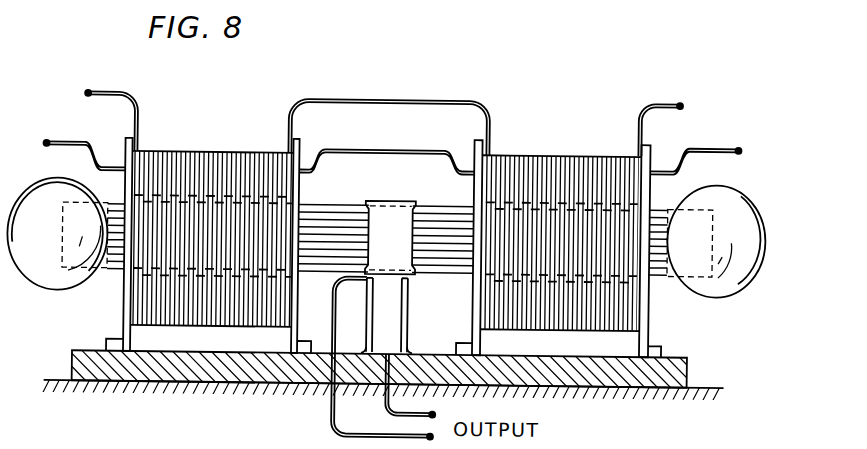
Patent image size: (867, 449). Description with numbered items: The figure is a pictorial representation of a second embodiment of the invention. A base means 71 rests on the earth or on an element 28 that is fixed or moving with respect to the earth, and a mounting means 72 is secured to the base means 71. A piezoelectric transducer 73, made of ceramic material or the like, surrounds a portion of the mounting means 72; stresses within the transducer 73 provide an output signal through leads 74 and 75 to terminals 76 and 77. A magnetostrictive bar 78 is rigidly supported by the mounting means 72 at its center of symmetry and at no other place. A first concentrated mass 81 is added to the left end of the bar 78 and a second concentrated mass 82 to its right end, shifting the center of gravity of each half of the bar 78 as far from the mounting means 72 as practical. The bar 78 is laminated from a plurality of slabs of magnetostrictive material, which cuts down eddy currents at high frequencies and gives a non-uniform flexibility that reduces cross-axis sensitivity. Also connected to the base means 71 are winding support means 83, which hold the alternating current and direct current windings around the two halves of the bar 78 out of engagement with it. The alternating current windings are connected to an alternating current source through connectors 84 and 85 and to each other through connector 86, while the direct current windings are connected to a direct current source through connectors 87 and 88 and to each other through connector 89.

The element 28 is at (50, 383).
The base means 71 is at (82, 364).
The mounting means 72 is at (399, 250).
The piezoelectric transducer 73 is at (397, 320).
The lead 74 is at (328, 336).
The lead 75 is at (384, 372).
The terminal 76 is at (433, 438).
The terminal 77 is at (437, 413).
The magnetostrictive bar 78 is at (340, 214).
The first concentrated mass 81 is at (47, 232).
The second concentrated mass 82 is at (741, 229).
The winding support means 83 is at (131, 339).
The connector 84 is at (77, 144).
The connector 85 is at (704, 143).
The connector 86 is at (393, 150).
The connector 87 is at (124, 97).
The connector 88 is at (661, 97).
The connector 89 is at (401, 99).